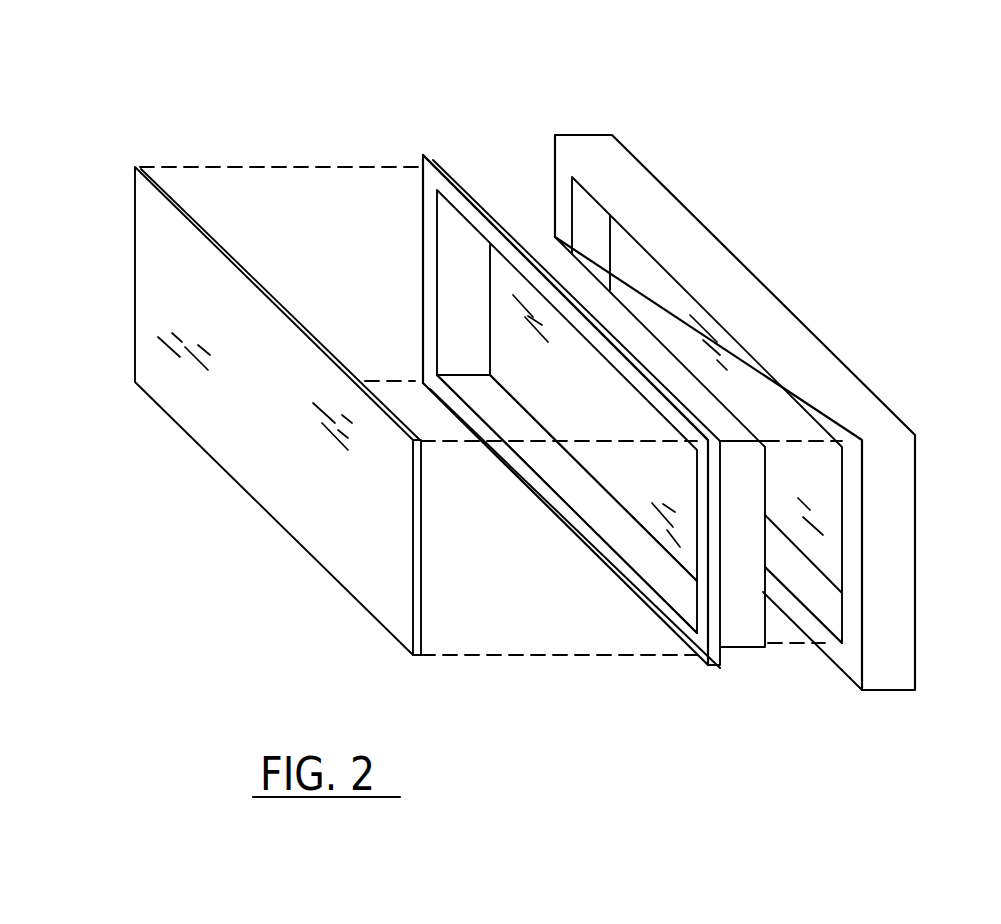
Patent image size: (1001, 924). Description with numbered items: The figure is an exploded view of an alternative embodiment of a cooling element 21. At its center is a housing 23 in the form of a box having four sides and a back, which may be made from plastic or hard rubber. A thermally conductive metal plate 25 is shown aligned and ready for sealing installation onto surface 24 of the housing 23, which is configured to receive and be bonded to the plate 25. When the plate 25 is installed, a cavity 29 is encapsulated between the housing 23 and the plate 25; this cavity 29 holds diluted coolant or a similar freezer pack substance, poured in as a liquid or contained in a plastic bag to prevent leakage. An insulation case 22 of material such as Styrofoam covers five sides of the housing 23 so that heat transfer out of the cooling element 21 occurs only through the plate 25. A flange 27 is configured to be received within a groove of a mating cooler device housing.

The cooling element 21 is at (157, 57).
The insulation case 22 is at (748, 295).
The housing 23 is at (485, 185).
The surface 24 is at (582, 524).
The thermally conductive plate 25 is at (318, 484).
The flange 27 is at (423, 155).
The cavity 29 is at (580, 392).